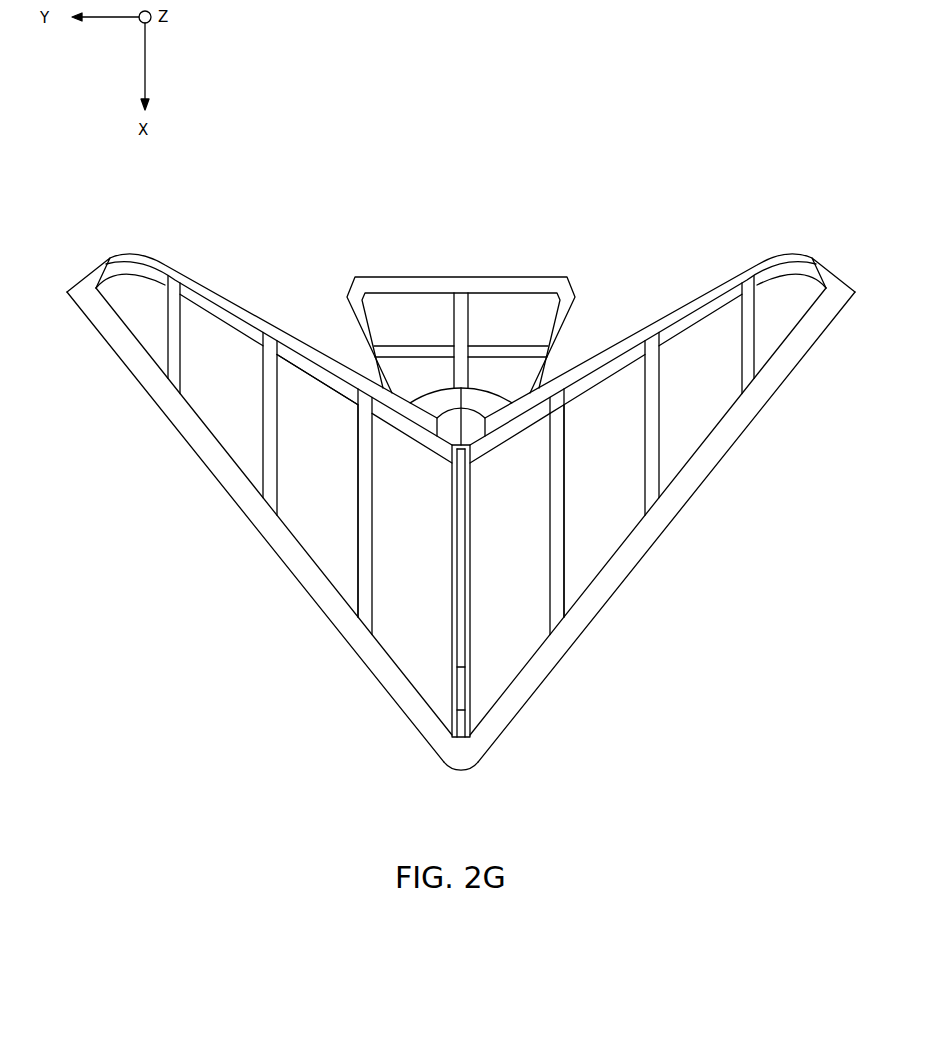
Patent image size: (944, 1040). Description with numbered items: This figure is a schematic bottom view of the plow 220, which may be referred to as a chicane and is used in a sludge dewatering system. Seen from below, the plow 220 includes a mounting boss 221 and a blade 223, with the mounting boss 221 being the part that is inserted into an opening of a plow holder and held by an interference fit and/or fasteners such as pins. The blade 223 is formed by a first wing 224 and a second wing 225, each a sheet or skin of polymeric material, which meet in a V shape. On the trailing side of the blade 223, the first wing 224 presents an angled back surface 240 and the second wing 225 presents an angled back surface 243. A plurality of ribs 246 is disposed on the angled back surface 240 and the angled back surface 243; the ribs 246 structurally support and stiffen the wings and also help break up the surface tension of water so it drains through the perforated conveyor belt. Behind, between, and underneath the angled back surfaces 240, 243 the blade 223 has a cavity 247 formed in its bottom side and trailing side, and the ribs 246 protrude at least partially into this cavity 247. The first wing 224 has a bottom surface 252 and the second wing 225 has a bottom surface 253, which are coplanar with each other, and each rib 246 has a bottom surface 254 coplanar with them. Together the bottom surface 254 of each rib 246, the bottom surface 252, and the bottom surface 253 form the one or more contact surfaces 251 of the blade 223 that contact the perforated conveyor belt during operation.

The plow 220 is at (685, 162).
The mounting boss 221 is at (458, 265).
The blade 223 is at (437, 783).
The first wing 224 is at (705, 492).
The second wing 225 is at (243, 522).
The angled back surface 240 is at (598, 535).
The angled back surface 243 is at (337, 547).
The ribs 246 is at (266, 386).
The cavity 247 is at (498, 486).
The contact surfaces 251 is at (400, 703).
The bottom surface 252 is at (632, 547).
The bottom surface 253 is at (297, 558).
The bottom surface 254 is at (268, 478).